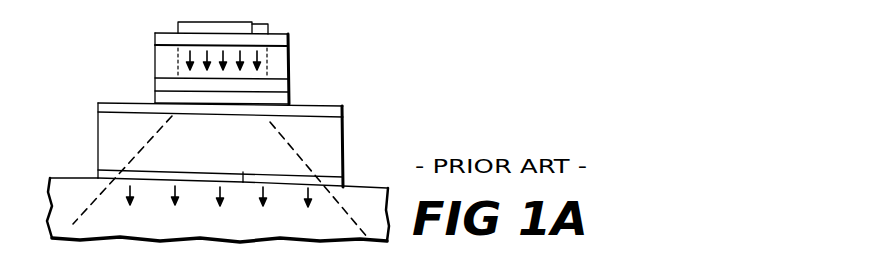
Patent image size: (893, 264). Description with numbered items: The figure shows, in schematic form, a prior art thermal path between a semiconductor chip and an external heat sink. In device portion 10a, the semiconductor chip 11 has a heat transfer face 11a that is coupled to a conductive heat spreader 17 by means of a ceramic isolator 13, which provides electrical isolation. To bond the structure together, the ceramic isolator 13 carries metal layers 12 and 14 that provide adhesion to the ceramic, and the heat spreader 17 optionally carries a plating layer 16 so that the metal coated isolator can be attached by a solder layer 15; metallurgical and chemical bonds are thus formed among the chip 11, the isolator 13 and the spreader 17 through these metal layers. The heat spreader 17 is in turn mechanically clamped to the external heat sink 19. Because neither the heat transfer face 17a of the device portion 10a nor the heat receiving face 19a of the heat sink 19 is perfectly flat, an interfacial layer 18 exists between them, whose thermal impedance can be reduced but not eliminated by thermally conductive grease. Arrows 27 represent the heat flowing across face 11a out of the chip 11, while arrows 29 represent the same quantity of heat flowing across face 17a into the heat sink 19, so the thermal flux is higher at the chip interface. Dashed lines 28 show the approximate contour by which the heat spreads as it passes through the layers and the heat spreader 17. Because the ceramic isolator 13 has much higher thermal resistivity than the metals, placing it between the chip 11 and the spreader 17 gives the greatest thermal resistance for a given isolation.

The device portion 10a is at (434, 132).
The semiconductor chip 11 is at (178, 28).
The heat transfer face 11a is at (255, 24).
The metal layer 12 is at (289, 45).
The ceramic isolator 13 is at (162, 58).
The metal layer 14 is at (290, 91).
The solder layer 15 is at (162, 98).
The plating layer 16 is at (104, 109).
The conductive heat spreader 17 is at (203, 137).
The heat transfer face 17a is at (208, 168).
The interfacial layer 18 is at (98, 173).
The external heat sink 19 is at (365, 194).
The heat receiving face 19a is at (242, 181).
The arrows 27 is at (183, 65).
The dashed lines 28 is at (140, 147).
The arrows 29 is at (312, 205).